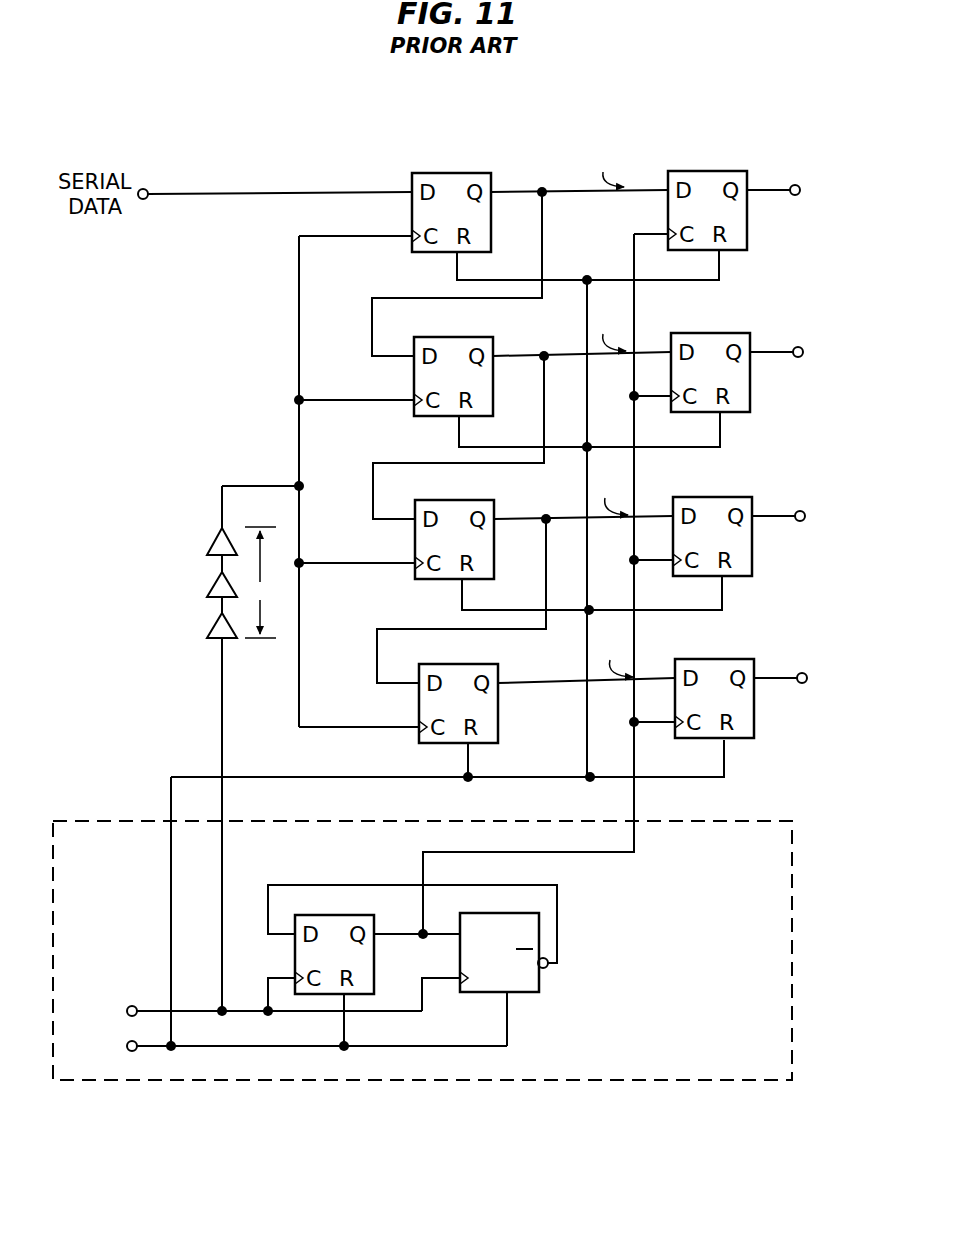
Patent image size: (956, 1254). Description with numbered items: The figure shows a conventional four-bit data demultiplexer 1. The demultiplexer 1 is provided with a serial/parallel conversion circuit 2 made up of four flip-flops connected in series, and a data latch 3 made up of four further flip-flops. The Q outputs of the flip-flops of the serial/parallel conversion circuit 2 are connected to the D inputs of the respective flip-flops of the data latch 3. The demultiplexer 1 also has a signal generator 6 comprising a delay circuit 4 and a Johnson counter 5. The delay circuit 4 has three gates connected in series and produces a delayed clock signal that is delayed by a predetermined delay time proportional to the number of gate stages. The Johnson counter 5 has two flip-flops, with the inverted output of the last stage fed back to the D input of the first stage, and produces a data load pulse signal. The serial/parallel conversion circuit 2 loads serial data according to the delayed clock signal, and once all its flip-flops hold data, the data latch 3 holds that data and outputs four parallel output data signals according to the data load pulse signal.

The data demultiplexer 1 is at (362, 152).
The serial/parallel conversion circuit 2 is at (506, 150).
The data latch 3 is at (762, 150).
The delay circuit 4 is at (175, 640).
The Johnson counter 5 is at (148, 820).
The signal generator 6 is at (108, 555).